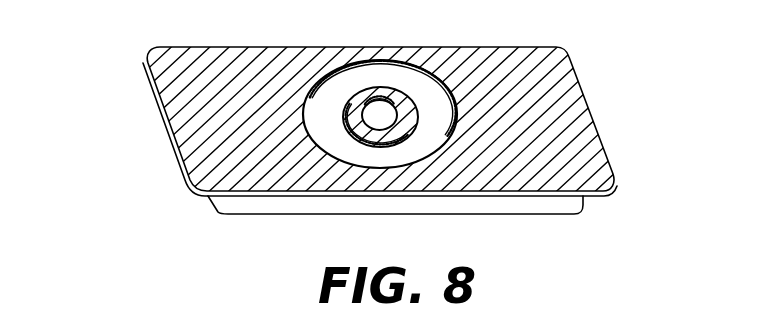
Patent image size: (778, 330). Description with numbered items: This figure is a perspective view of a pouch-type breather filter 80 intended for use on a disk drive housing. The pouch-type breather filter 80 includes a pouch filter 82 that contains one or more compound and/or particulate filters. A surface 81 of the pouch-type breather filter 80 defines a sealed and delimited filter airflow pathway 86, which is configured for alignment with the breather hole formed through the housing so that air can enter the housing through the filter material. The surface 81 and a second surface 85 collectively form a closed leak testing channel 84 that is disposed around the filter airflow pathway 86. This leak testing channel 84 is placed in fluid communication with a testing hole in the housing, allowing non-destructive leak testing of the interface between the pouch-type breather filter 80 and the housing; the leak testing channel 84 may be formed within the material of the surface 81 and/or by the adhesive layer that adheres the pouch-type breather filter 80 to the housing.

The pouch-type breather filter 80 is at (104, 96).
The surface 81 is at (590, 119).
The pouch filter 82 is at (566, 206).
The leak testing channel 84 is at (424, 82).
The surface 85 is at (391, 95).
The filter airflow pathway 86 is at (375, 108).